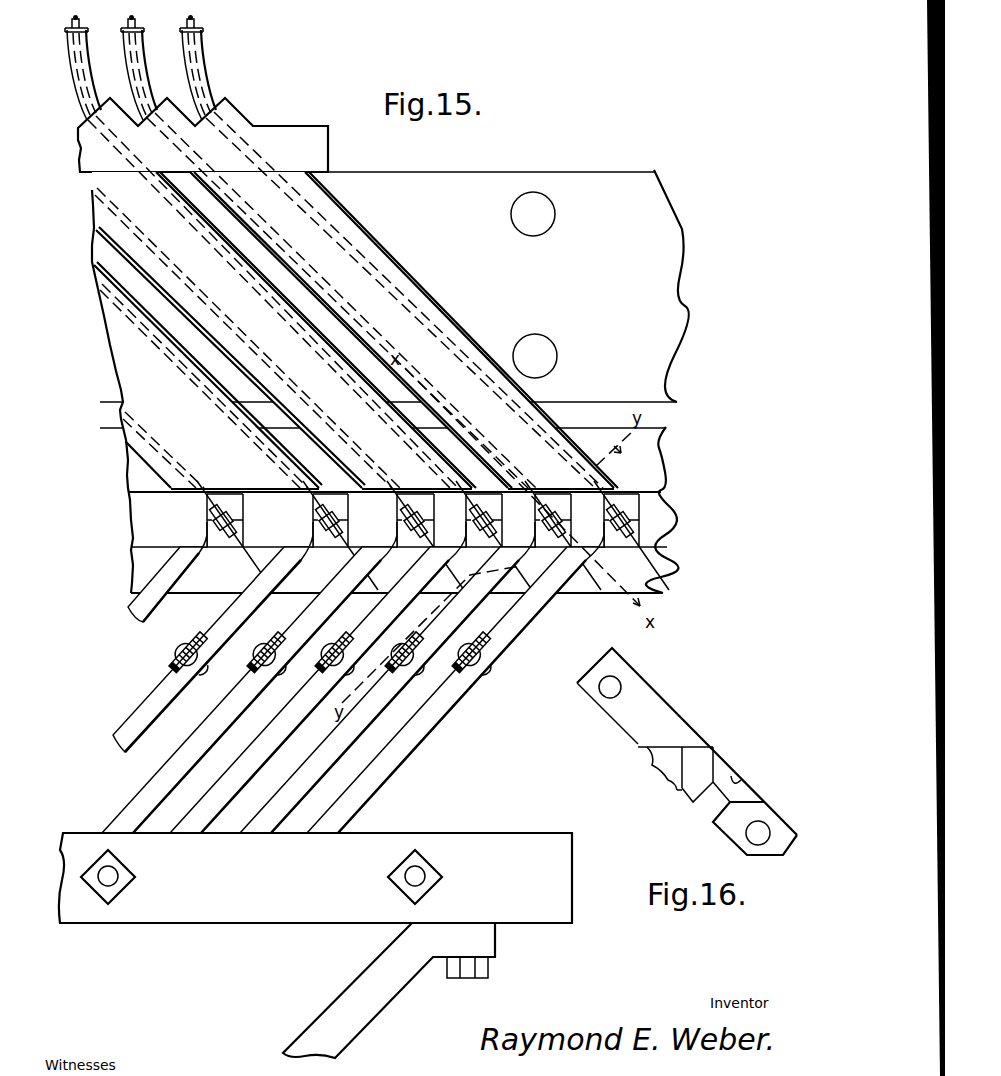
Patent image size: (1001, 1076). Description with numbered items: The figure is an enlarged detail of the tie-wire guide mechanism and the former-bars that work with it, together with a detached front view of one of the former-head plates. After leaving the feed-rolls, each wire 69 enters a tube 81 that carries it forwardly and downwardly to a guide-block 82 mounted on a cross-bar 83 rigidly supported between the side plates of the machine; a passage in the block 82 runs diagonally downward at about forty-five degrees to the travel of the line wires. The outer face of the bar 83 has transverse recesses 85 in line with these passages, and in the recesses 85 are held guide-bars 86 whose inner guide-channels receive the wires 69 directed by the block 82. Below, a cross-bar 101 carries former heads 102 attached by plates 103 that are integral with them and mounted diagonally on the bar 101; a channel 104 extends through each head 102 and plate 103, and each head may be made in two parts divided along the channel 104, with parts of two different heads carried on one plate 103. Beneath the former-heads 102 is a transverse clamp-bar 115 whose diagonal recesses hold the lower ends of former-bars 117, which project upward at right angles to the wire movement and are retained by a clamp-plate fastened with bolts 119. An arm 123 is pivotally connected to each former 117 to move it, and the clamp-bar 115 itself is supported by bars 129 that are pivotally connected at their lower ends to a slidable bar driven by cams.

In FIG. 15, the tie-wire 69 is at (188, 23).
In FIG. 15, the tube 81 is at (72, 68).
In FIG. 15, the guide-block 82 is at (298, 140).
In FIG. 15, the cross-bar 83 is at (452, 180).
In FIG. 15, the transverse recesses 85 is at (408, 274).
In FIG. 15, the guide-bars 86 is at (90, 195).
In FIG. 15, the cross-bar 101 is at (657, 445).
In FIG. 15, the former heads 102 is at (640, 496).
In FIG. 16, the former heads 102 is at (672, 758).
In FIG. 15, the plates 103 is at (661, 574).
In FIG. 16, the plates 103 is at (643, 700).
In FIG. 15, the channel 104 is at (640, 520).
In FIG. 16, the channel 104 is at (663, 769).
In FIG. 15, the clamp-bar 115 is at (487, 845).
In FIG. 15, the former-bars 117 is at (538, 618).
In FIG. 15, the bolts 119 is at (112, 882).
In FIG. 15, the arm 123 is at (168, 669).
In FIG. 15, the bars 129 is at (379, 1007).